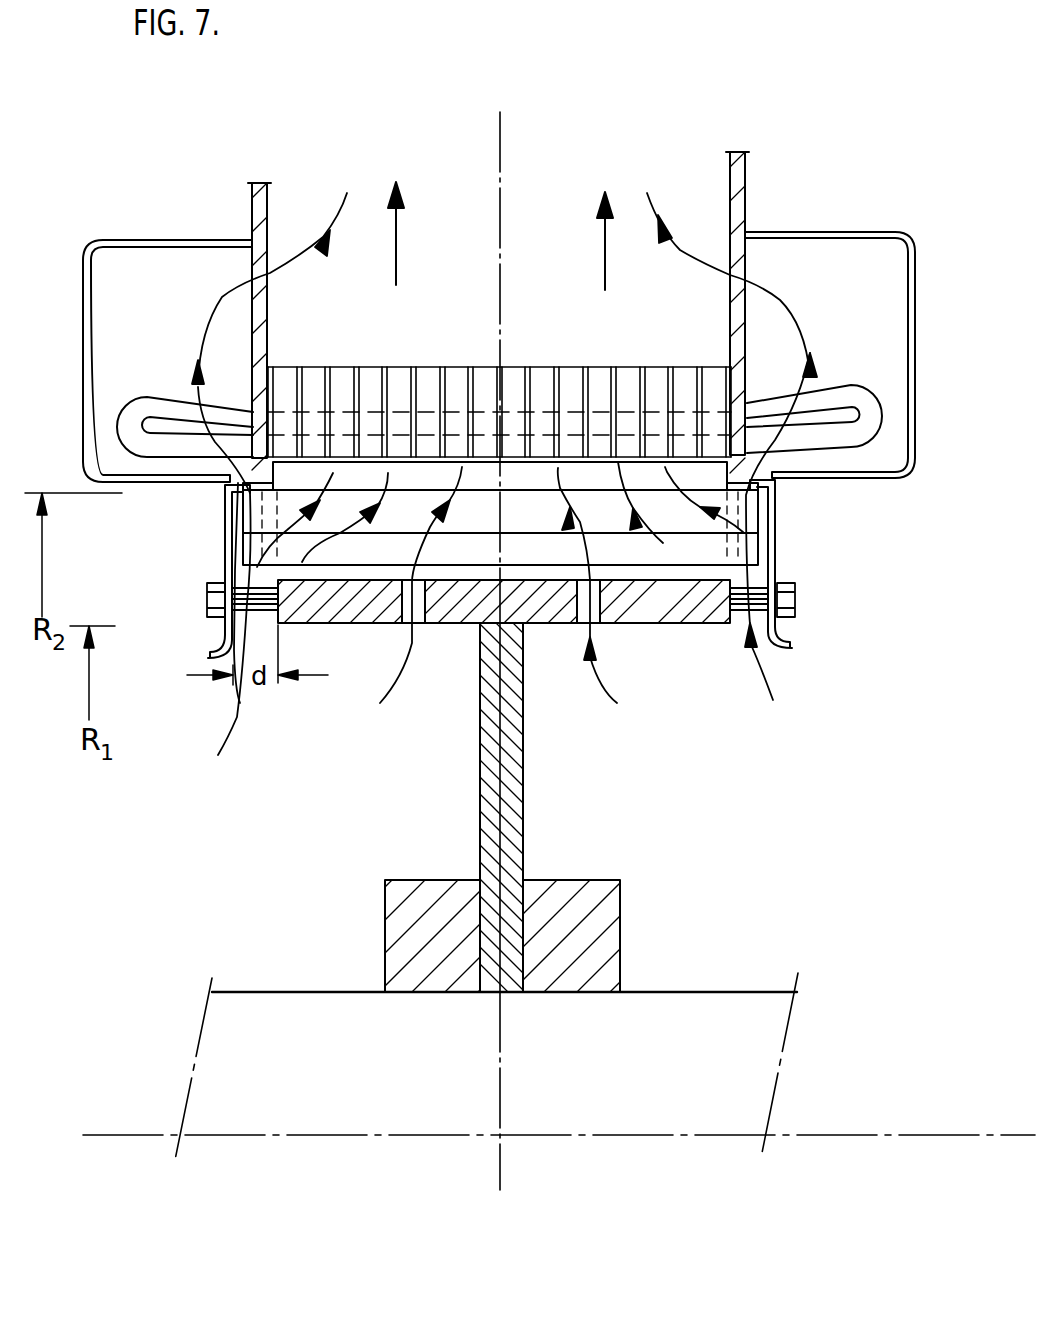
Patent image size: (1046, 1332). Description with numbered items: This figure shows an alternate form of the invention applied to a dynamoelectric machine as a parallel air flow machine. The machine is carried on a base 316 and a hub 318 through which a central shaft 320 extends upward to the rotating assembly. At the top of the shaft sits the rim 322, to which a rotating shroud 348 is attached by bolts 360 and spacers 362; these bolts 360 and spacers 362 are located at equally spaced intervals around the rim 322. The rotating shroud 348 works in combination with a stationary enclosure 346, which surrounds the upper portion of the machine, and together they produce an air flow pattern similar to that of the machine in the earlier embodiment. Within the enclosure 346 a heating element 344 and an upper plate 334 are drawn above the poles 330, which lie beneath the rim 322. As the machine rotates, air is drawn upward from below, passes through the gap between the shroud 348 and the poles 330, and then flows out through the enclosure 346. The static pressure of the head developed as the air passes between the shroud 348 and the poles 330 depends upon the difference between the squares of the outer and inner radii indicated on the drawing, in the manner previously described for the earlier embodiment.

The base 316 is at (705, 990).
The hub 318 is at (600, 878).
The shaft 320 is at (523, 757).
The rim 322 is at (363, 625).
The poles 330 is at (302, 562).
The top plate 334 is at (417, 625).
The heating element 344 is at (150, 412).
The stationary enclosure 346 is at (92, 317).
The rotating shroud 348 is at (225, 547).
The bolts 360 is at (205, 608).
The spacers 362 is at (235, 685).